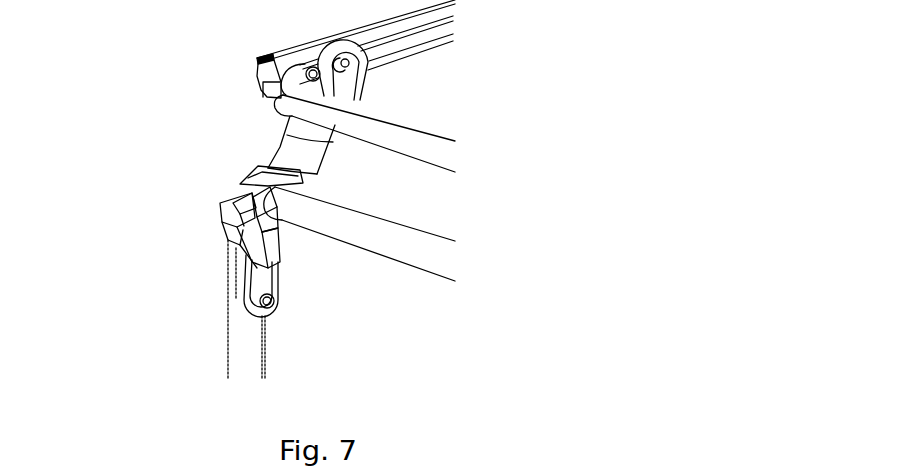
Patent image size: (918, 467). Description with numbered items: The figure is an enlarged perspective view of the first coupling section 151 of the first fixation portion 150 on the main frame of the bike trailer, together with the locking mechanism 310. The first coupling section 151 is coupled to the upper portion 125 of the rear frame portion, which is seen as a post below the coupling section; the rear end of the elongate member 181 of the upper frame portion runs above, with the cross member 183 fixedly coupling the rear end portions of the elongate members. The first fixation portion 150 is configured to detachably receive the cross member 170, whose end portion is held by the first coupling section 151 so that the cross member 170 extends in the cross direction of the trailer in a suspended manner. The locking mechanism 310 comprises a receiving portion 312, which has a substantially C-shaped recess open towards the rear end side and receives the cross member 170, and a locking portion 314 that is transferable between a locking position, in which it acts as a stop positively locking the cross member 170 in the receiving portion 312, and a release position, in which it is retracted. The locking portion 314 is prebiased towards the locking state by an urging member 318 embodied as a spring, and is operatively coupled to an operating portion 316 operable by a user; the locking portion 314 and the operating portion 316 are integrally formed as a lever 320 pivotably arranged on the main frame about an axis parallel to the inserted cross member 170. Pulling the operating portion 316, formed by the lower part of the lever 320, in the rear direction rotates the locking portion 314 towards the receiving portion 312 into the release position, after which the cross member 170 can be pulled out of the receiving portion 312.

The upper portion 125 is at (242, 360).
The first fixation portion 150 is at (147, 227).
The first coupling section 151 is at (230, 170).
The cross member 170 is at (424, 236).
The elongate member 181 is at (428, 42).
The cross member 183 is at (400, 135).
The locking mechanism 310 is at (215, 203).
The receiving portion 312 is at (266, 166).
The locking portion 314 is at (255, 208).
The operating portion 316 is at (243, 256).
The urging member 318 is at (230, 238).
The lever 320 is at (285, 268).